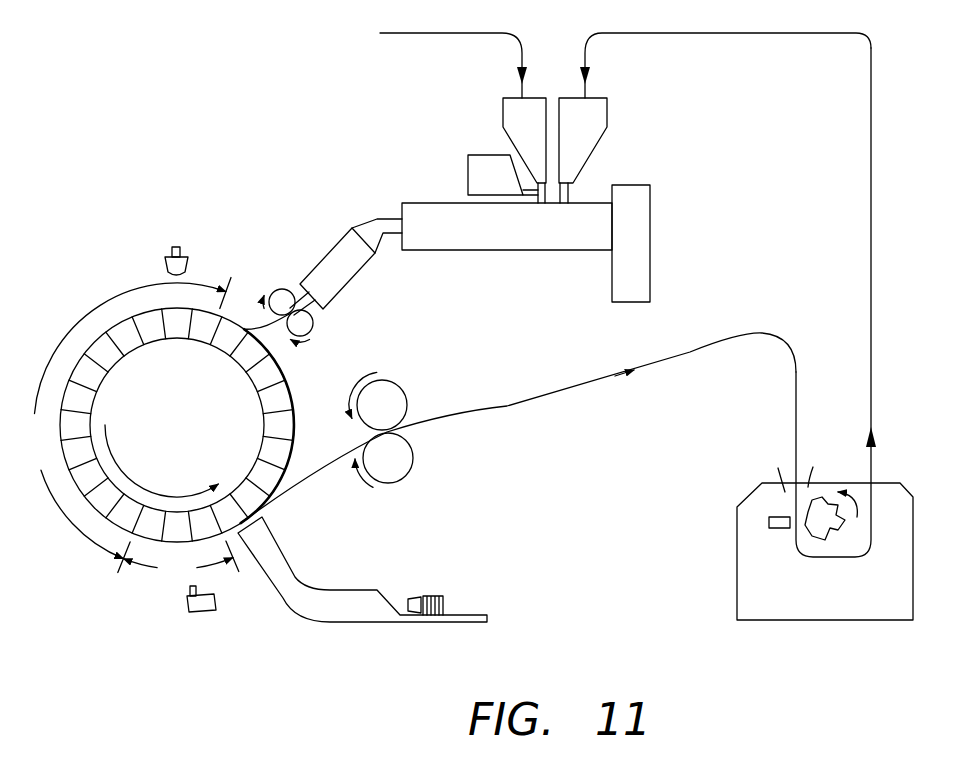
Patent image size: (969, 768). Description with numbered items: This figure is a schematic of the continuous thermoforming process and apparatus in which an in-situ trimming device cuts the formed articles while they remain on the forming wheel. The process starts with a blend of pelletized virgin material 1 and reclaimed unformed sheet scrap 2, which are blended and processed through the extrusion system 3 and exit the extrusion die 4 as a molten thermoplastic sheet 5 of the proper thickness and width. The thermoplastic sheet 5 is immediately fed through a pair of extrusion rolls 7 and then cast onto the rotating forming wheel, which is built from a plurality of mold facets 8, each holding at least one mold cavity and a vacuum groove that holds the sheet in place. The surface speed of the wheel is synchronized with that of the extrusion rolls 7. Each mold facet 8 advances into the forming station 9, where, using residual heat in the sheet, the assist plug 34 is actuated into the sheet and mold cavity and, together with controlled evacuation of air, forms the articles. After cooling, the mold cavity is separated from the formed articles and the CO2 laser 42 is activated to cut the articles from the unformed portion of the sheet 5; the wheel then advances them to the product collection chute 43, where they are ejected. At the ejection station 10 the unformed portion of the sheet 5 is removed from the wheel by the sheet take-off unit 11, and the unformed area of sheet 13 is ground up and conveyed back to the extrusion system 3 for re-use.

The pelletized virgin material 1 is at (524, 150).
The reclaimed unformed sheet scrap 2 is at (583, 150).
The extrusion system 3 is at (526, 228).
The extrusion die 4 is at (354, 232).
The thermoplastic sheet 5 is at (305, 308).
The extrusion rolls 7 is at (274, 290).
The mold facets 8 is at (120, 368).
The forming station 9 is at (128, 425).
The ejection station 10 is at (180, 562).
The sheet take-off unit 11 is at (382, 486).
The unformed area of sheet 13 is at (792, 450).
The assist plug 34 is at (175, 245).
The CO2 laser 42 is at (212, 613).
The product collection chute 43 is at (299, 573).